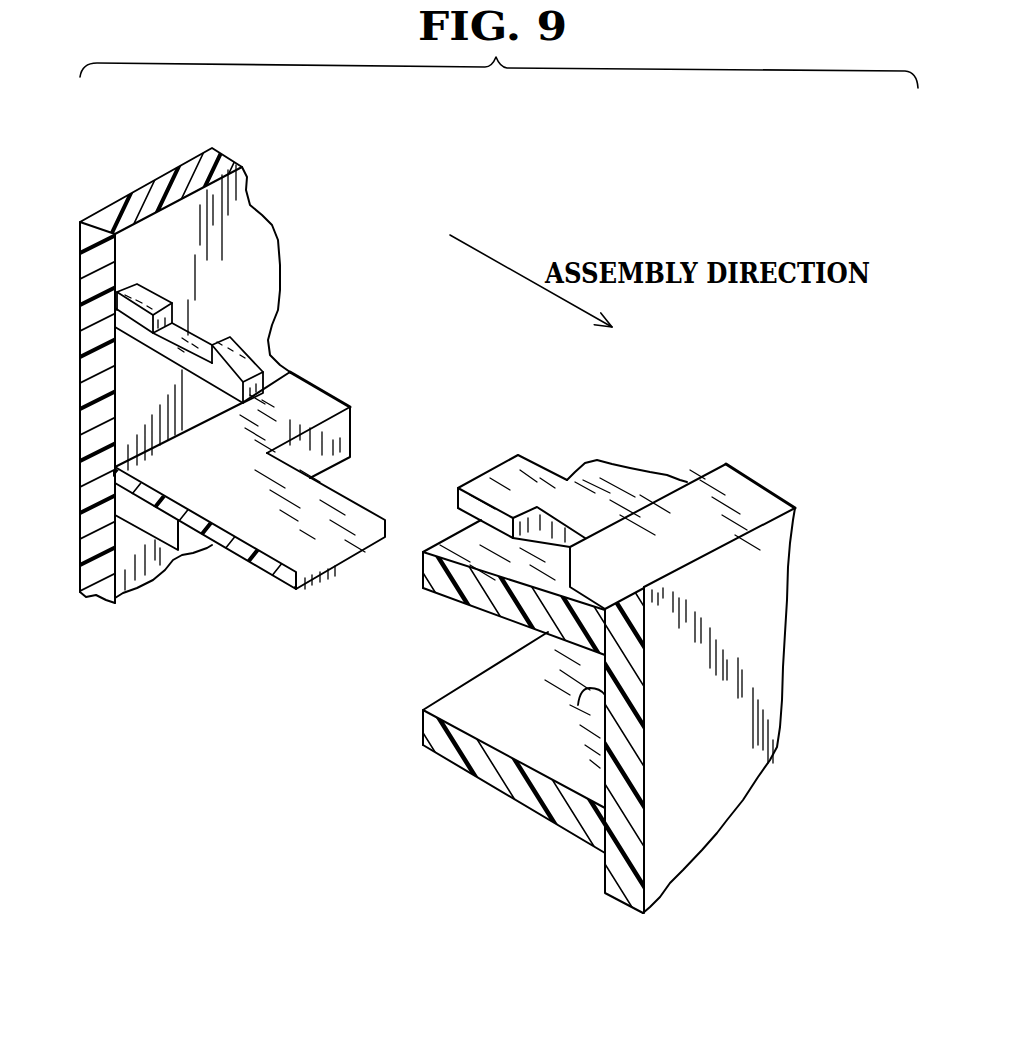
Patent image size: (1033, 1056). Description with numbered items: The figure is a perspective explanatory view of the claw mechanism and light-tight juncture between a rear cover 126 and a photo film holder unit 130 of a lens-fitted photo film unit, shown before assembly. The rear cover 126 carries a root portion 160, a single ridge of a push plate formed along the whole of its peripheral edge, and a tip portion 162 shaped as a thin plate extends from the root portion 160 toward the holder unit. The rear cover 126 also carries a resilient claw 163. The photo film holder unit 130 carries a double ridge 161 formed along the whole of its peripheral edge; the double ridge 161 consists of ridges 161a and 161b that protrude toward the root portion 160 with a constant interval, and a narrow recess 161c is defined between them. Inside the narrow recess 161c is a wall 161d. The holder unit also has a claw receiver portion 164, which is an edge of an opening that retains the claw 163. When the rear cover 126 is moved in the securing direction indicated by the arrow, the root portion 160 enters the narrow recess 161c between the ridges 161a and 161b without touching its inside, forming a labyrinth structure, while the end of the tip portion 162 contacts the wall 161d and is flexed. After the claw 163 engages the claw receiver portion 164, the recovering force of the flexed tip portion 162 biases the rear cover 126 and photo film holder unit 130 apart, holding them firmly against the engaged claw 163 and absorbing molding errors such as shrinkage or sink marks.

The rear cover 126 is at (270, 164).
The photo film holder unit 130 is at (797, 467).
The root portion 160 is at (315, 397).
The double ridge 161 is at (297, 600).
The ridge 161a is at (443, 592).
The ridge 161b is at (465, 758).
The narrow recess 161c is at (598, 700).
The wall 161d is at (597, 742).
The tip portion 162 is at (340, 503).
The claw 163 is at (250, 352).
The claw receiver portion 164 is at (557, 533).